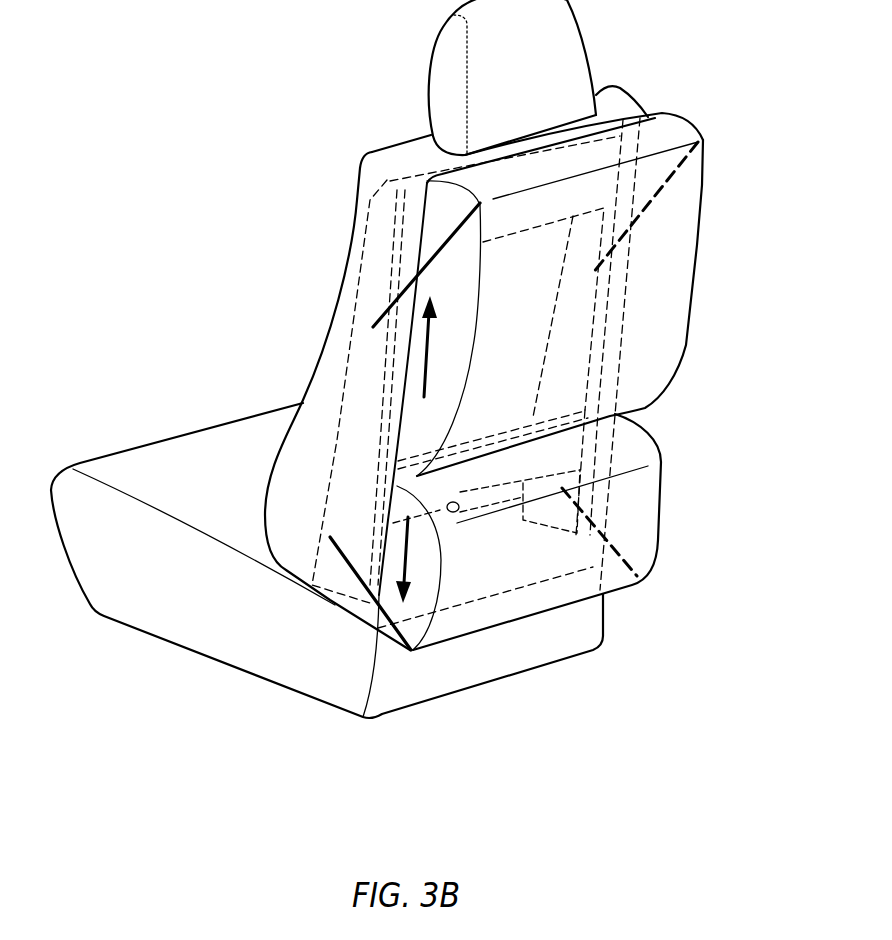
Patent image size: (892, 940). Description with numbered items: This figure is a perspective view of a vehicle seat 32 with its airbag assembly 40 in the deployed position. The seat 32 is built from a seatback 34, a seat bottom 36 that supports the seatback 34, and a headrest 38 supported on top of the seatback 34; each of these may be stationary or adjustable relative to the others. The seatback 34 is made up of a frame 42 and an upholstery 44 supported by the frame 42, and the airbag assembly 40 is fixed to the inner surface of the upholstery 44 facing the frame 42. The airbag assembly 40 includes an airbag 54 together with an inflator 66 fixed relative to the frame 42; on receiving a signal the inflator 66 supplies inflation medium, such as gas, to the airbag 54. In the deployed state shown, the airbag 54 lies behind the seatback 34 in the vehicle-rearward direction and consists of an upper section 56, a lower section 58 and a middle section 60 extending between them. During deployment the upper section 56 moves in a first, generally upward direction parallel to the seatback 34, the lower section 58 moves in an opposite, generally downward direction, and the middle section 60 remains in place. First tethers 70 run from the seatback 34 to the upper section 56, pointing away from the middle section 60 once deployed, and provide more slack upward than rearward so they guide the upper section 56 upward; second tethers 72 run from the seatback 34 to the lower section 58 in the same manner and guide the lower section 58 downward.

The seat 32 is at (197, 120).
The seatback 34 is at (354, 218).
The seat bottom 36 is at (166, 437).
The headrest 38 is at (432, 70).
The airbag assembly 40 is at (684, 400).
The frame 42 is at (387, 180).
The upholstery 44 is at (621, 93).
The airbag 54 is at (700, 208).
The upper section 56 is at (696, 276).
The lower section 58 is at (661, 498).
The middle section 60 is at (397, 487).
The inflator 66 is at (470, 520).
The first tethers 70 is at (376, 318).
The second tethers 72 is at (348, 563).